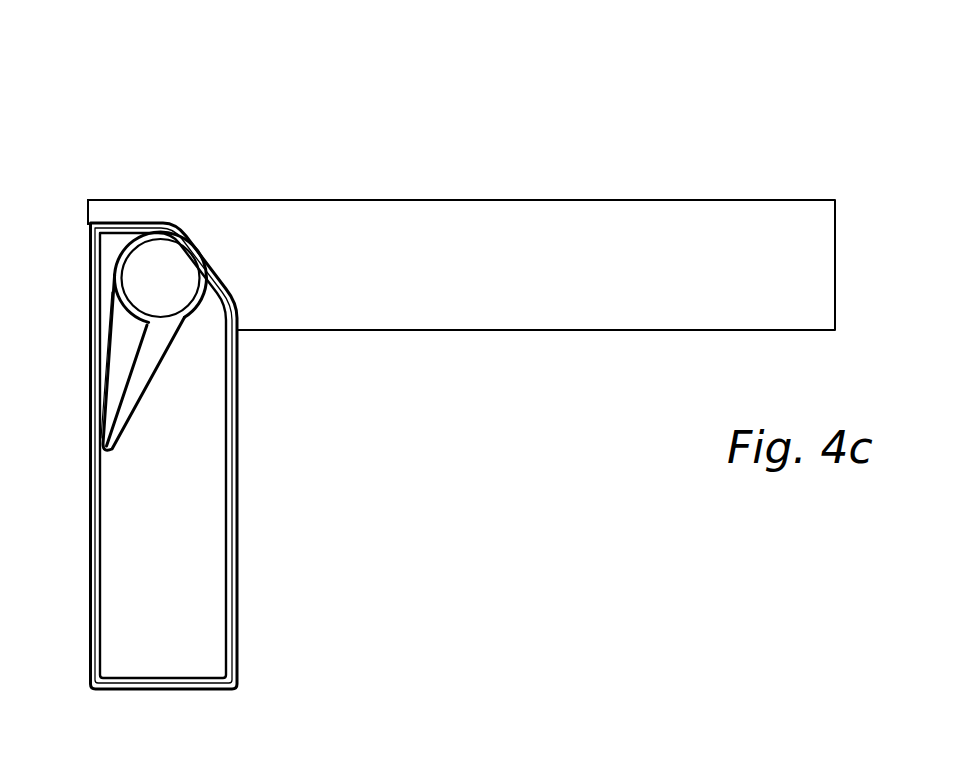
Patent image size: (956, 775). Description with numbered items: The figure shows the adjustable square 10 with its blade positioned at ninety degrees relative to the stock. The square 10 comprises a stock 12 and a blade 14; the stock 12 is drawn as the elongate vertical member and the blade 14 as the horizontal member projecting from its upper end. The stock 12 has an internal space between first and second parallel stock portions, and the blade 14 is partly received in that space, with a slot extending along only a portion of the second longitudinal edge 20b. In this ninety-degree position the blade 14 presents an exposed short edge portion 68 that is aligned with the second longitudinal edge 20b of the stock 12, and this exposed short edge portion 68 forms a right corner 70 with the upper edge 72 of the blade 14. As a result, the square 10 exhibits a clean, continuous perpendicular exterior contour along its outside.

The square 10 is at (441, 468).
The stock 12 is at (237, 597).
The blade 14 is at (443, 230).
The second longitudinal edge 20b is at (90, 463).
The exposed short edge portion 68 is at (88, 209).
The right corner 70 is at (88, 200).
The upper edge 72 is at (203, 200).